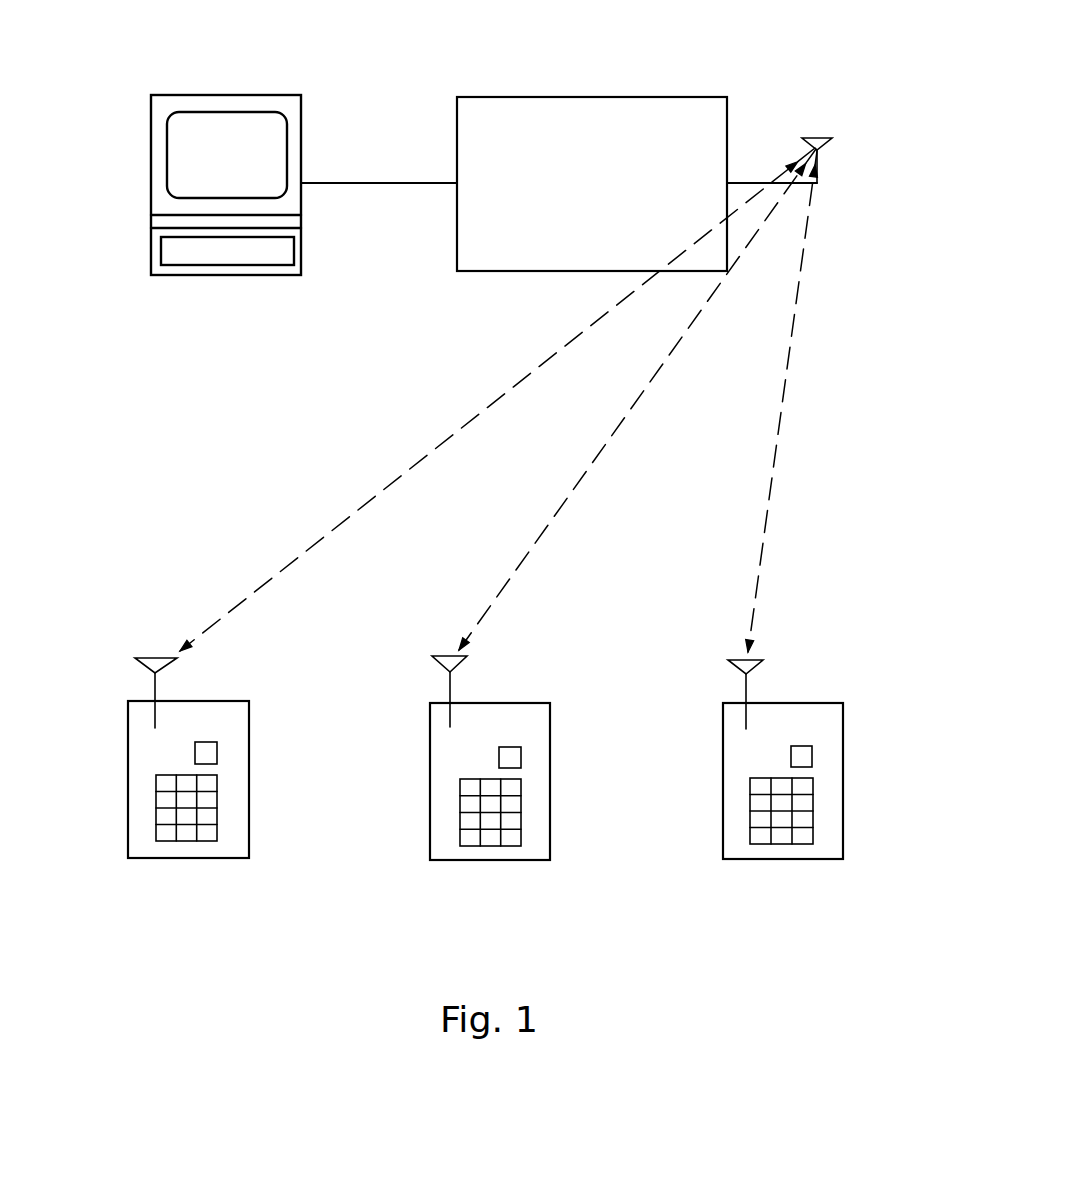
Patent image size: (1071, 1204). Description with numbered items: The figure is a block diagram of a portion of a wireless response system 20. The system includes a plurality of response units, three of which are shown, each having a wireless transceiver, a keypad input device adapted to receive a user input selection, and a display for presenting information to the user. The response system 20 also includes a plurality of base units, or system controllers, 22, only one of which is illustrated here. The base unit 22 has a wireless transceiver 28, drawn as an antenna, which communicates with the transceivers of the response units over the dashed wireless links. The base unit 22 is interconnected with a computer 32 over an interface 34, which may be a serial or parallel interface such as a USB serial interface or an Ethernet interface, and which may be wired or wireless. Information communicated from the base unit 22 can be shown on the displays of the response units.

The wireless response system 20 is at (242, 433).
The base unit 22 is at (476, 95).
The wireless transceiver 28 is at (822, 143).
The computer 32 is at (301, 243).
The interface 34 is at (320, 185).